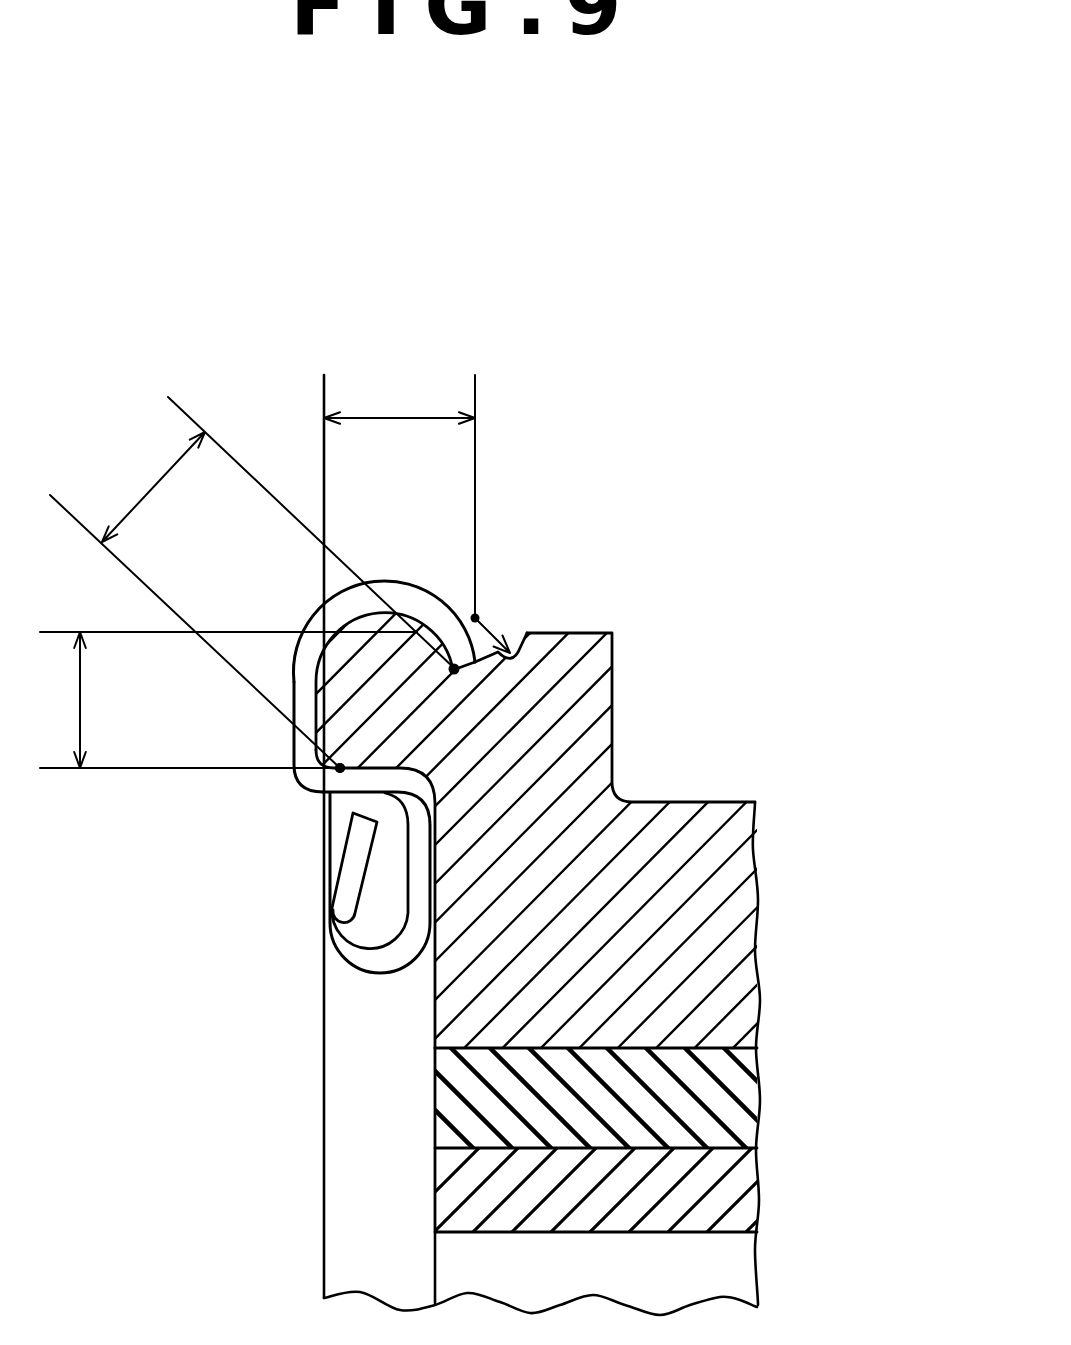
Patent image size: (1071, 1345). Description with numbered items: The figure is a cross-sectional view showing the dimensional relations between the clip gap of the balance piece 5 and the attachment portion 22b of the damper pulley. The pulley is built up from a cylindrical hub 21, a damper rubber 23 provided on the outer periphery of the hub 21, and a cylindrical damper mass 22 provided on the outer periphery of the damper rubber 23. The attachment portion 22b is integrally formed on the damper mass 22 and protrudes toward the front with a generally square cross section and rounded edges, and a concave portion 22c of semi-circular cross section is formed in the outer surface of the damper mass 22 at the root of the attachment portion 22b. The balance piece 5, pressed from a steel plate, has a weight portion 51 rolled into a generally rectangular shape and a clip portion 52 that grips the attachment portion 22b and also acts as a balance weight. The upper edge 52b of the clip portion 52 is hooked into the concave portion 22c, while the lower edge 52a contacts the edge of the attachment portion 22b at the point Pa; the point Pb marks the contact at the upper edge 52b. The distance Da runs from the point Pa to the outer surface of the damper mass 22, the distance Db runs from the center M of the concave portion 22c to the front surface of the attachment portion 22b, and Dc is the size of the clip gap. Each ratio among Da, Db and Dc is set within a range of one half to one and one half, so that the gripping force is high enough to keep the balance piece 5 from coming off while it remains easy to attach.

The balance piece 5 is at (468, 793).
The weight portion 51 is at (335, 983).
The clip portion 52 is at (468, 688).
The lower edge 52a is at (290, 731).
The upper edge 52b is at (455, 669).
The hub 21 is at (437, 1192).
The damper mass 22 is at (535, 707).
The attachment portion 22b is at (372, 657).
The concave portion 22c is at (524, 648).
The damper rubber 23 is at (437, 1117).
The center of the concave portion M is at (476, 614).
The contact point Pa is at (340, 768).
The point Pb is at (455, 669).
The first distance Da is at (224, 700).
The second distance Db is at (399, 492).
The third distance Dc is at (251, 582).